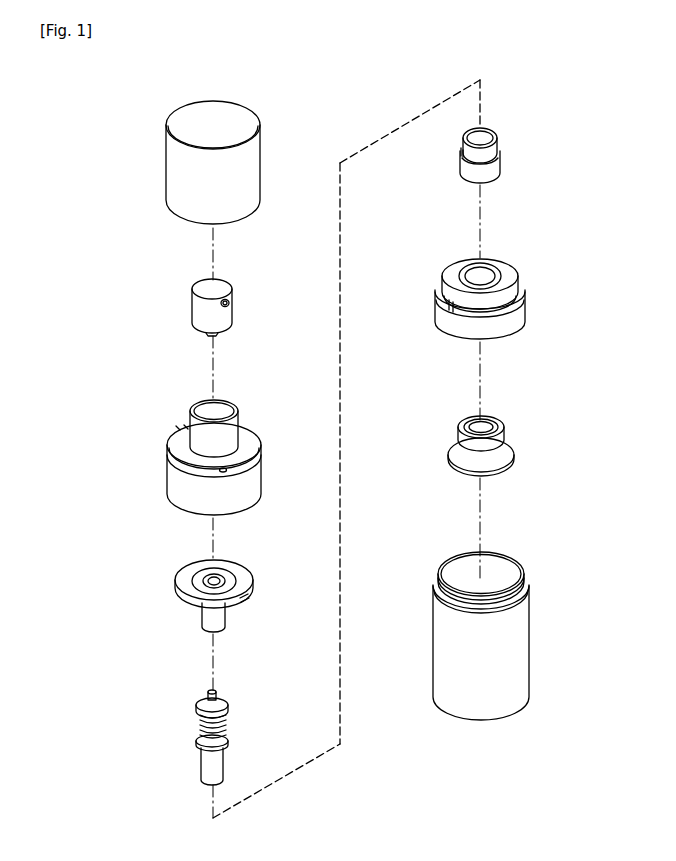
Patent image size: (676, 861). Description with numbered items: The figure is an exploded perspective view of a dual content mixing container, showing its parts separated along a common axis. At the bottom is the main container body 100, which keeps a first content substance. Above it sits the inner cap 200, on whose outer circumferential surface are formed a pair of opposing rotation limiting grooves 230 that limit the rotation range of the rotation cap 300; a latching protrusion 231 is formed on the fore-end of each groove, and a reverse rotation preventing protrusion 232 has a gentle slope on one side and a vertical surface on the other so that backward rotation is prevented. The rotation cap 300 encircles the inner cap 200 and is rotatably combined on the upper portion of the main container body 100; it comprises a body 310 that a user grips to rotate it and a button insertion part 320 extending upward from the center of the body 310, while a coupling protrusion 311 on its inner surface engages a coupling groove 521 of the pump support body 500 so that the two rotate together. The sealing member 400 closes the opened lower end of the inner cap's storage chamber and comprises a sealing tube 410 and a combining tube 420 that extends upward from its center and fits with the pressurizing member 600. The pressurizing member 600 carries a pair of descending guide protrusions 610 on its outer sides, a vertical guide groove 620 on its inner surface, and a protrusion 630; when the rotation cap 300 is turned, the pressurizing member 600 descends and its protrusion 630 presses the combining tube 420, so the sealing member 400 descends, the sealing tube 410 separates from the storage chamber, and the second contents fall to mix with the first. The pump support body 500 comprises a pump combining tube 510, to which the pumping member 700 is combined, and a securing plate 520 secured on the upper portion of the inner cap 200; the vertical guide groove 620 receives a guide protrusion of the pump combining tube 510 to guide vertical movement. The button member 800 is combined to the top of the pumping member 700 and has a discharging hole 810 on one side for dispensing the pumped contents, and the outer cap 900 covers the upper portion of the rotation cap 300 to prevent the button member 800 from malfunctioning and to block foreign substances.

The main container body 100 is at (524, 647).
The inner cap 200 is at (490, 299).
The rotation limiting groove 230 is at (506, 286).
The latching protrusion 231 is at (448, 300).
The reverse rotation preventing protrusion 232 is at (516, 297).
The rotation cap 300 is at (187, 457).
The body 310 is at (174, 478).
The coupling protrusion 311 is at (252, 462).
The button insertion part 320 is at (193, 428).
The sealing member 400 is at (527, 446).
The sealing tube 410 is at (500, 458).
The combining tube 420 is at (498, 432).
The pump support body 500 is at (185, 596).
The pump combining tube 510 is at (210, 618).
The securing plate 520 is at (186, 577).
The coupling groove 521 is at (248, 594).
The pressurizing member 600 is at (481, 133).
The descending guide protrusion 610 is at (460, 152).
The vertical guide groove 620 is at (468, 131).
The protrusion 630 is at (506, 136).
The pumping member 700 is at (183, 742).
The button member 800 is at (198, 307).
The discharging hole 810 is at (230, 304).
The outer cap 900 is at (176, 172).